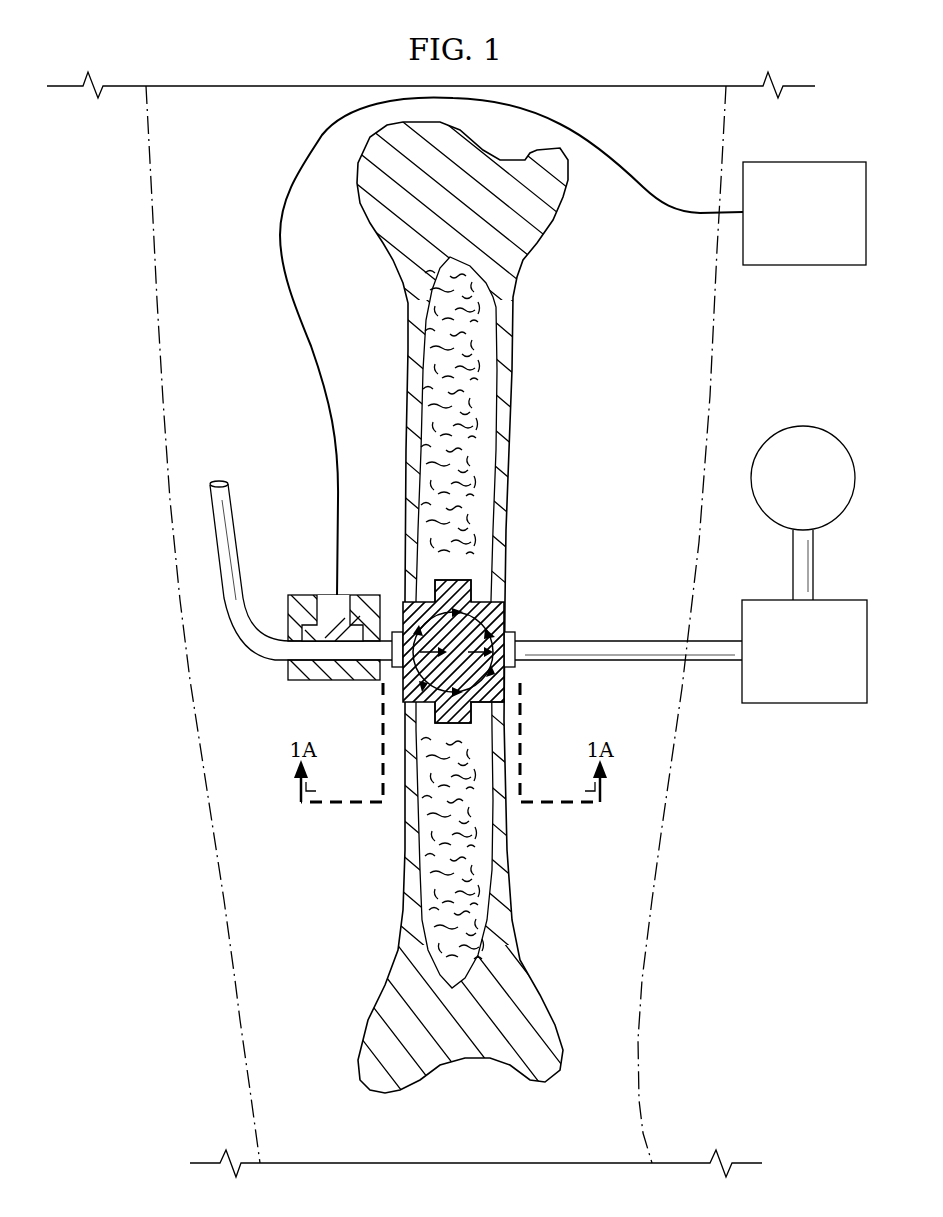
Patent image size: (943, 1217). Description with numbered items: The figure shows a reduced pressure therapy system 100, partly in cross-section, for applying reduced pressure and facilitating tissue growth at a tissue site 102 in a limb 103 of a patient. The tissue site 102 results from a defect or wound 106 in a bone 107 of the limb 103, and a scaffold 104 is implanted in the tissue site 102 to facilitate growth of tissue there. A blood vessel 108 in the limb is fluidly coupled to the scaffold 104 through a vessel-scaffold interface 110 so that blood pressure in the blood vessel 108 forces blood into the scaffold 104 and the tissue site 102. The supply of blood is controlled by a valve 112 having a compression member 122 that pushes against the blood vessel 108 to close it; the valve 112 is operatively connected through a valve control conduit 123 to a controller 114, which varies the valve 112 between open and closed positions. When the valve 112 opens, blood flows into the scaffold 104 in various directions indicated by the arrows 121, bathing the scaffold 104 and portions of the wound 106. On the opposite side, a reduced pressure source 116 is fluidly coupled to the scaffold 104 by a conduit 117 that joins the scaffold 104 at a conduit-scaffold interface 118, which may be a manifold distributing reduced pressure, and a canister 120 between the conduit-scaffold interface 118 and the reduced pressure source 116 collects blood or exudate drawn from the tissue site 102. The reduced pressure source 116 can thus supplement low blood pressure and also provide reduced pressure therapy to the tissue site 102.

The reduced pressure therapy system 100 is at (656, 49).
The tissue site 102 is at (452, 649).
The limb 103 is at (208, 828).
The scaffold 104 is at (477, 588).
The wound 106 is at (505, 708).
The bone 107 is at (552, 244).
The blood vessel 108 is at (263, 656).
The vessel-scaffold interface 110 is at (392, 680).
The valve 112 is at (300, 682).
The controller 114 is at (786, 227).
The reduced pressure source 116 is at (784, 490).
The conduit 117 is at (816, 560).
The conduit-scaffold interface 118 is at (515, 638).
The canister 120 is at (784, 665).
The arrows 121 is at (402, 606).
The compression member 122 is at (290, 628).
The valve control conduit 123 is at (306, 156).